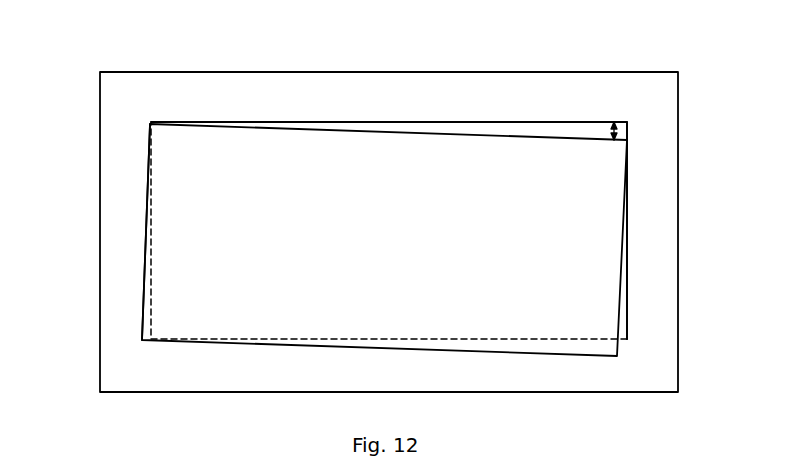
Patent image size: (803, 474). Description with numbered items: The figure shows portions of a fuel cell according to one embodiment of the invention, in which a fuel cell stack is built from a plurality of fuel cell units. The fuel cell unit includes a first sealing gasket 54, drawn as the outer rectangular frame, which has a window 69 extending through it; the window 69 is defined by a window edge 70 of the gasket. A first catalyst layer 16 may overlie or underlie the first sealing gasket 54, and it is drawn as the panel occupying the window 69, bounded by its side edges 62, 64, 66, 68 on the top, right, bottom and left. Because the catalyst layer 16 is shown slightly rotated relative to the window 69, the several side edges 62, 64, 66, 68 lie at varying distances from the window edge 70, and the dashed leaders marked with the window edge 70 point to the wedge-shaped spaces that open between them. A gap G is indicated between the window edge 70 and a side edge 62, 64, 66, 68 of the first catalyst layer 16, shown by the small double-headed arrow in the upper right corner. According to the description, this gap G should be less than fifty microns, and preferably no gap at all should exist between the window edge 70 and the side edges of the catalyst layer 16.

The first catalyst layer 16 is at (565, 285).
The first sealing gasket 54 is at (655, 327).
The side edge 62 is at (477, 135).
The side edge 64 is at (626, 230).
The side edge 66 is at (500, 355).
The side edge 68 is at (142, 322).
The window 69 is at (547, 133).
The window edge 70 is at (563, 121).
The gap G is at (612, 125).